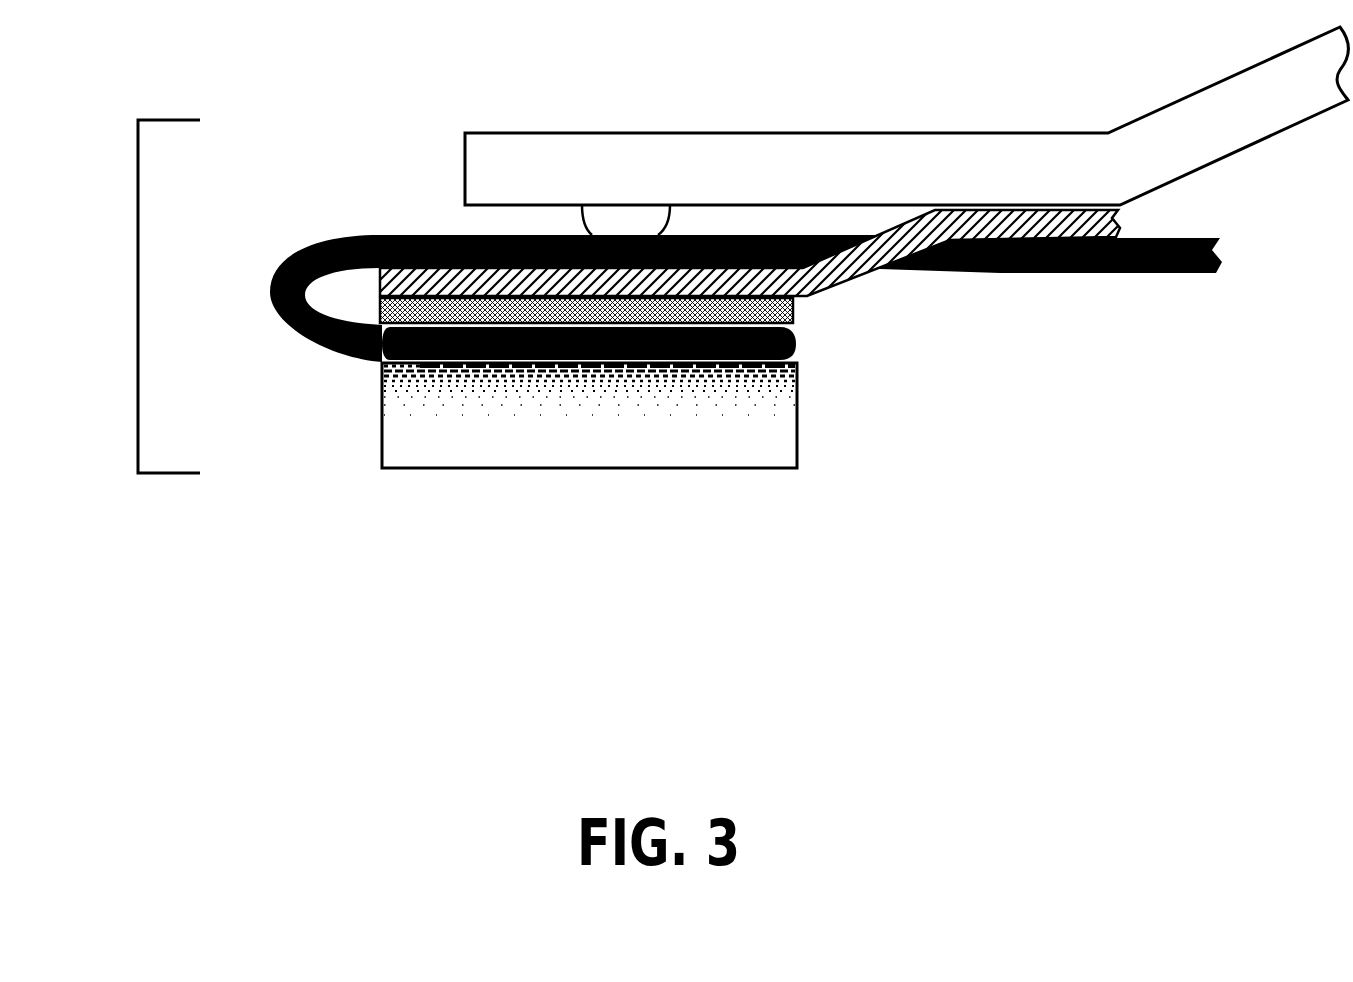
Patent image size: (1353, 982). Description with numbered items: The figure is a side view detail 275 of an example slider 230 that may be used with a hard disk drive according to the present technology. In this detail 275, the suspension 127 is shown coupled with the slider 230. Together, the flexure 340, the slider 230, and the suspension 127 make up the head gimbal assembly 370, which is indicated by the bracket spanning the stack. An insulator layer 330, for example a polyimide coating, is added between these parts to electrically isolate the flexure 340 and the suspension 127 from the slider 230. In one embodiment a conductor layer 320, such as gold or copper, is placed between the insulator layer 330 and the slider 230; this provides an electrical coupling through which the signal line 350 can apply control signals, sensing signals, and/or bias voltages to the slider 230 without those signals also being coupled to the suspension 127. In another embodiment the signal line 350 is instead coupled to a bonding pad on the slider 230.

The suspension 127 is at (603, 132).
The slider 230 is at (382, 428).
The side view detail 275 is at (777, 595).
The conductor layer 320 is at (795, 345).
The insulator layer 330 is at (798, 305).
The flexure 340 is at (840, 283).
The signal line 350 is at (1187, 268).
The head gimbal assembly 370 is at (138, 383).